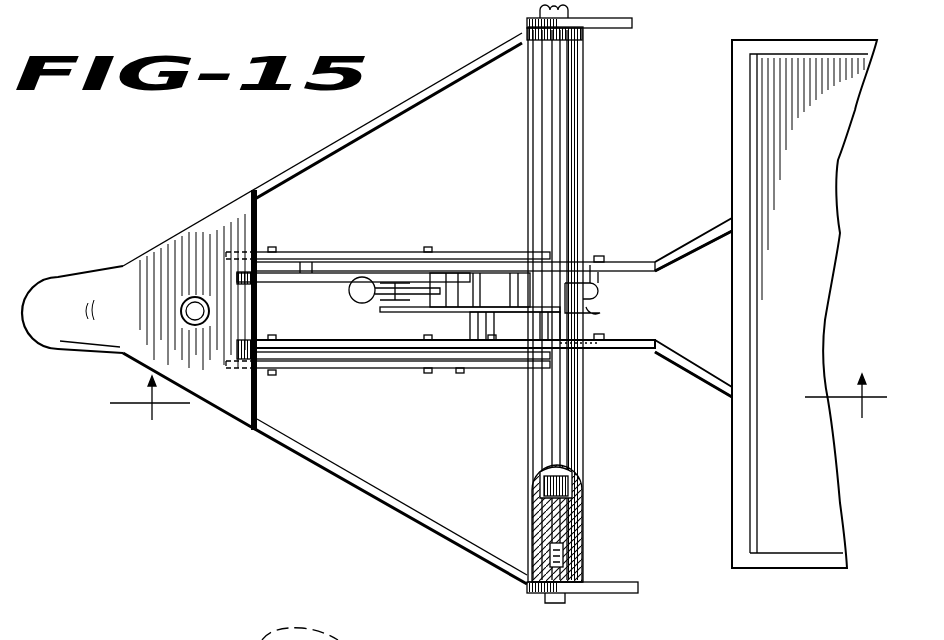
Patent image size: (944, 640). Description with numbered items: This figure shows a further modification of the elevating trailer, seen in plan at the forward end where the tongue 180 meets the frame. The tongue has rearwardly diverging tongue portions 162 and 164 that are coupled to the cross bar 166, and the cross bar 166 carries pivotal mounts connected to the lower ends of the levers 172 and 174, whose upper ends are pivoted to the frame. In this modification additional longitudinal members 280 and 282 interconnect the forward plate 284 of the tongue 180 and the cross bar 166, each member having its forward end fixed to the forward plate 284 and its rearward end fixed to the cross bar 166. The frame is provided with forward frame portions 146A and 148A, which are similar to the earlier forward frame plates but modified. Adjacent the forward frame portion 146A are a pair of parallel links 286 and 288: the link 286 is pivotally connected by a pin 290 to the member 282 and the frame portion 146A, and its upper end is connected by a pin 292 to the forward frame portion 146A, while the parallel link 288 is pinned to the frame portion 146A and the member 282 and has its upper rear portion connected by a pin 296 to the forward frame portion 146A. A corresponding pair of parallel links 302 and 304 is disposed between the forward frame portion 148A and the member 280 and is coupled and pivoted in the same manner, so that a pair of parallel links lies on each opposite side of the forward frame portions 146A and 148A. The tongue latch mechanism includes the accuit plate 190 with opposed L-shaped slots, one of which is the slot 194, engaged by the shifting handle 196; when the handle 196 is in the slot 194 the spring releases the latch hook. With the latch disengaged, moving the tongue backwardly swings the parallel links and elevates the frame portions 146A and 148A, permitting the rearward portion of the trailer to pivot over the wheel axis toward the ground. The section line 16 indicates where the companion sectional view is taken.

The section line 16 is at (498, 414).
The forward frame portion 146A is at (379, 338).
The forward frame portion 148A is at (300, 285).
The tongue portion 162 is at (372, 126).
The tongue portion 164 is at (338, 473).
The cross bar 166 is at (578, 181).
The lever 172 is at (616, 26).
The lever 174 is at (598, 583).
The tongue 180 is at (62, 354).
The accuit plate 190 is at (476, 281).
The L-shaped slot 194 is at (597, 308).
The shifting handle 196 is at (383, 302).
The longitudinal member 280 is at (372, 255).
The longitudinal member 282 is at (425, 372).
The forward plate 284 is at (226, 402).
The parallel link 286 is at (342, 354).
The parallel link 288 is at (590, 354).
The pin 290 is at (280, 375).
The pin 292 is at (461, 374).
The pin 296 is at (639, 334).
The parallel link 302 is at (335, 270).
The parallel link 304 is at (587, 263).